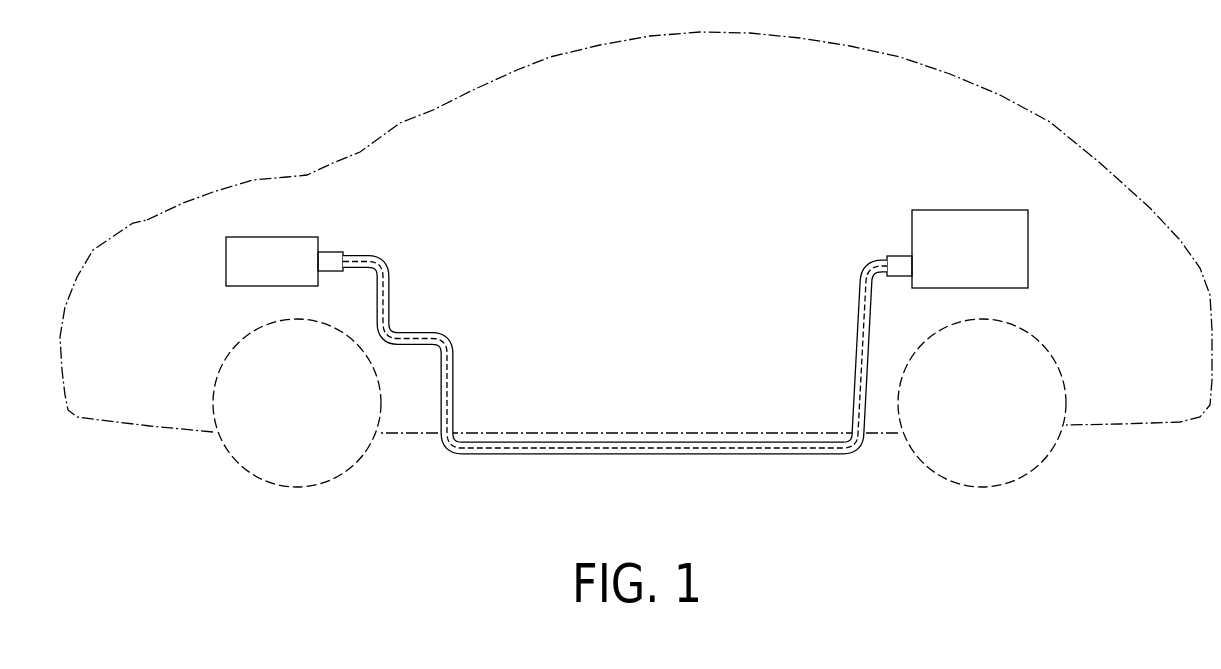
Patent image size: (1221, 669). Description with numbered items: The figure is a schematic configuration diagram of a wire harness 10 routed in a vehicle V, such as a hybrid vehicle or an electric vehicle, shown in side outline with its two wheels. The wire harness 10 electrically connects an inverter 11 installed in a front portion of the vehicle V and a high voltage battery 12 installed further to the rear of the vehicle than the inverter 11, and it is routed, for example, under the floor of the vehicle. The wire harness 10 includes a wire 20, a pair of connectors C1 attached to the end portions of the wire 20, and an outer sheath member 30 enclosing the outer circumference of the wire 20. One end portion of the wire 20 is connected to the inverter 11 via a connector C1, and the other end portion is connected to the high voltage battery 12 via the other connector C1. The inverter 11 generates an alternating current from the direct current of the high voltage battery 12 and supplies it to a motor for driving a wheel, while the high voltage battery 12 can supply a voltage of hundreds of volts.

The vehicle V is at (778, 36).
The wire harness 10 is at (615, 355).
The wire 20 is at (452, 370).
The outer sheath member 30 is at (438, 337).
The inverter 11 is at (272, 237).
The high voltage battery 12 is at (970, 210).
The connector C1 is at (340, 251).